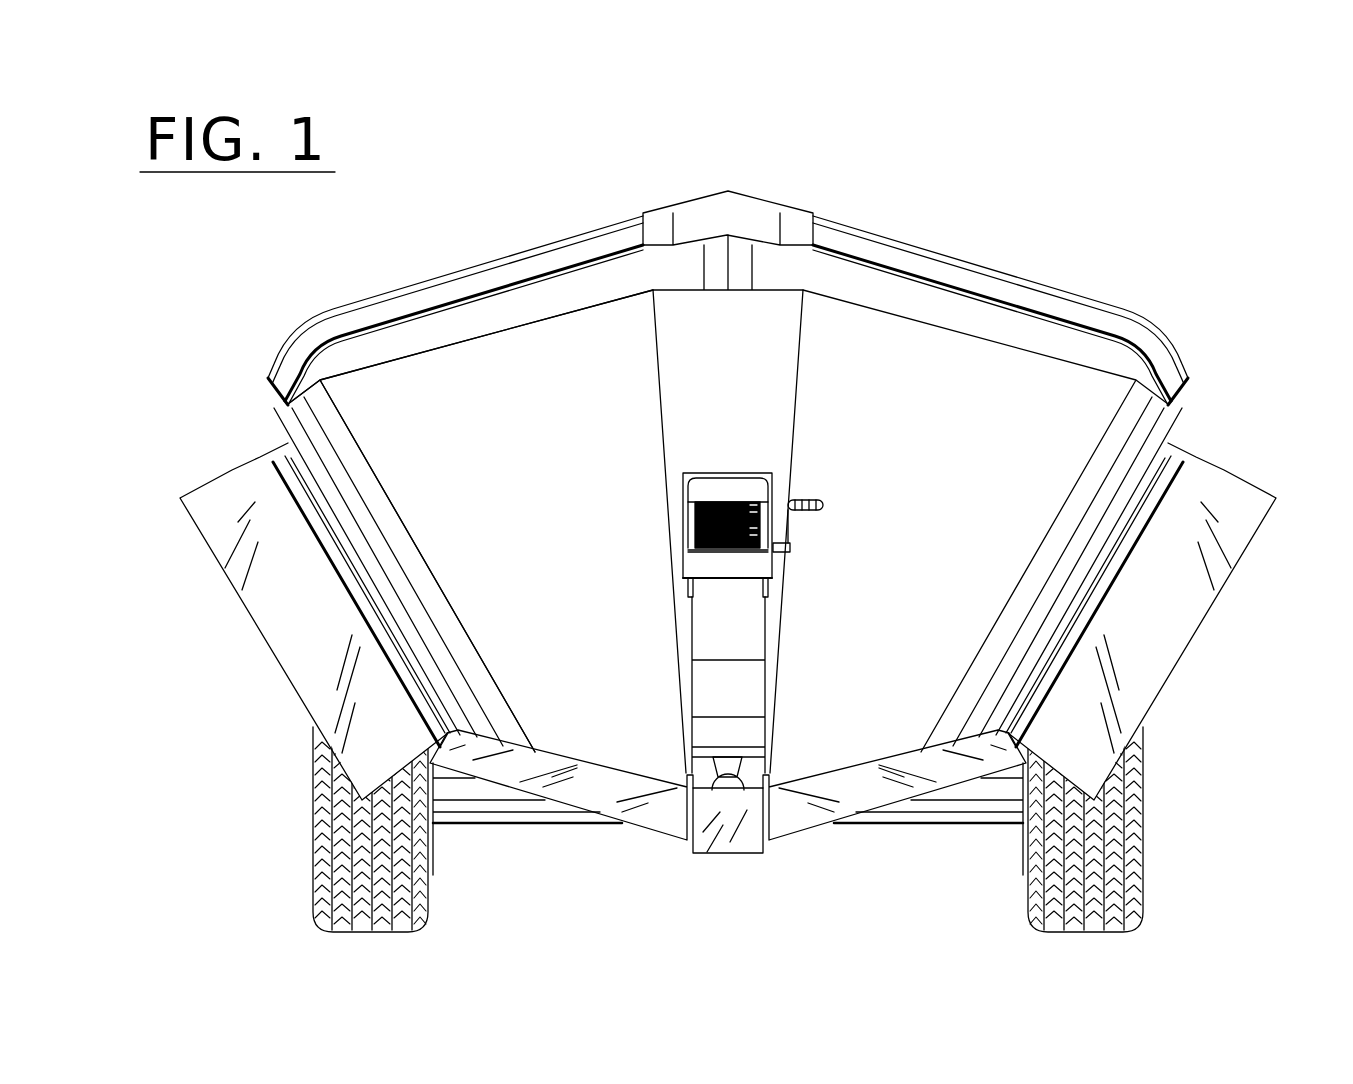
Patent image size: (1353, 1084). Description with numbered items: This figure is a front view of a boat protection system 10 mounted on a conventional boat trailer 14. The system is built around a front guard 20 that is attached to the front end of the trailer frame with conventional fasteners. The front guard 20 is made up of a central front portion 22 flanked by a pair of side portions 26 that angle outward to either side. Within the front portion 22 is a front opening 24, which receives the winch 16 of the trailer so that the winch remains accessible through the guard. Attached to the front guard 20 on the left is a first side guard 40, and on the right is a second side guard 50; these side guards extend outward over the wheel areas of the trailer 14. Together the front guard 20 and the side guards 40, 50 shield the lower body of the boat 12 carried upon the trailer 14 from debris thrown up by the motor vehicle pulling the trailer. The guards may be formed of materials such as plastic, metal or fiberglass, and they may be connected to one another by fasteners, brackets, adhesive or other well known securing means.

The boat protection system 10 is at (1140, 200).
The boat 12 is at (1127, 300).
The trailer 14 is at (800, 818).
The winch 16 is at (683, 549).
The front guard 20 is at (540, 320).
The front portion 22 is at (728, 342).
The front opening 24 is at (762, 473).
The side portions 26 is at (975, 485).
The first side guard 40 is at (320, 638).
The second side guard 50 is at (1150, 633).